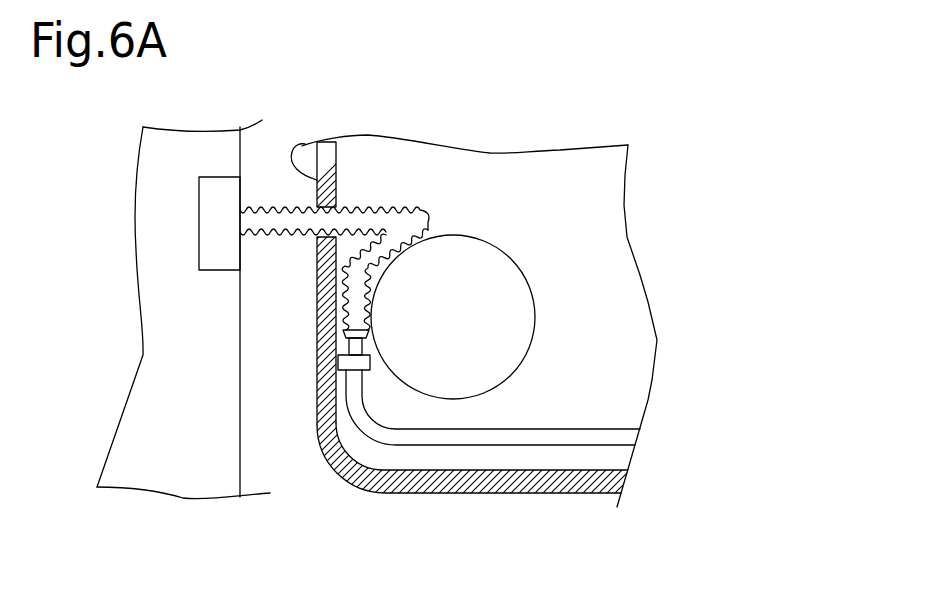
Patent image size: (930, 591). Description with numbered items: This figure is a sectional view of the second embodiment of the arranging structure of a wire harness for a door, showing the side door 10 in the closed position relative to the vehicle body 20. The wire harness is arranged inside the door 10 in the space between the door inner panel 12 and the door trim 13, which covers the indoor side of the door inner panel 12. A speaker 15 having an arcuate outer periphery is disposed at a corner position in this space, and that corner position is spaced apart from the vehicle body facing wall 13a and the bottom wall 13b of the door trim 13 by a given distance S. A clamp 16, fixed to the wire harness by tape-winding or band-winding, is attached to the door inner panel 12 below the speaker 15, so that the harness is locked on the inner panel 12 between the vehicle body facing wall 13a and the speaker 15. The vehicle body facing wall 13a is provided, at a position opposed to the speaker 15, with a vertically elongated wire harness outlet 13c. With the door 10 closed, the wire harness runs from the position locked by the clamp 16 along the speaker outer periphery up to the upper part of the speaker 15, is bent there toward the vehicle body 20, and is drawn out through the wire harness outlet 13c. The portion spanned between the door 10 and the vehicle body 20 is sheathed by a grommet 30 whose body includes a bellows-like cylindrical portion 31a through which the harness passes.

The side door 10 is at (490, 290).
The door inner panel 12 is at (608, 223).
The door trim 13 is at (465, 338).
The vehicle body facing wall 13a is at (300, 148).
The bottom wall 13b is at (500, 483).
The wire harness outlet 13c is at (305, 237).
The speaker 15 is at (517, 307).
The clamp 16 is at (313, 430).
The vehicle body 20 is at (195, 127).
The grommet 30 is at (199, 250).
The bellows-like cylindrical portion 31a is at (263, 238).
The given distance S is at (377, 452).